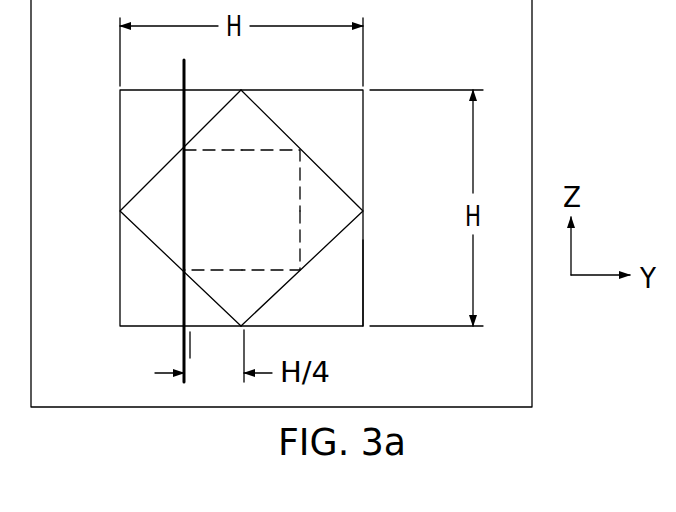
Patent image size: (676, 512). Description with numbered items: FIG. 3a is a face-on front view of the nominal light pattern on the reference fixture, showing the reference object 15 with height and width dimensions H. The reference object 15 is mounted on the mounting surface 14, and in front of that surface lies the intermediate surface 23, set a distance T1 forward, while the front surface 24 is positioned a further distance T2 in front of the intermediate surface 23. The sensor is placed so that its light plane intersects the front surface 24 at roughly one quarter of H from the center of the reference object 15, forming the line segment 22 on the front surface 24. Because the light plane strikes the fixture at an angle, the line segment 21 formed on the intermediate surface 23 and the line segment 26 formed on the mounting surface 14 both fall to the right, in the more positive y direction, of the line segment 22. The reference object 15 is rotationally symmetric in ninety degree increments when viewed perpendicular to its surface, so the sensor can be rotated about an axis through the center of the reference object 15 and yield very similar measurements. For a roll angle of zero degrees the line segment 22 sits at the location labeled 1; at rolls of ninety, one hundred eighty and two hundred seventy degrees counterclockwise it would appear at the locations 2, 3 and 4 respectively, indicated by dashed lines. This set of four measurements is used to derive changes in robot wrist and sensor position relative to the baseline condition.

The location at zero degree roll 1 is at (213, 189).
The location at ninety degree roll 2 is at (216, 258).
The location at one hundred eighty degree roll 3 is at (271, 233).
The location at two hundred seventy degree roll 4 is at (265, 180).
The mounting surface 14 is at (450, 371).
The reference object 15 is at (363, 130).
The line segment on surface 23 21 is at (182, 108).
The line segment on surface 24 22 is at (182, 216).
The intermediate surface 23 is at (343, 296).
The front surface 24 is at (340, 216).
The line segment on surface 14 26 is at (186, 74).